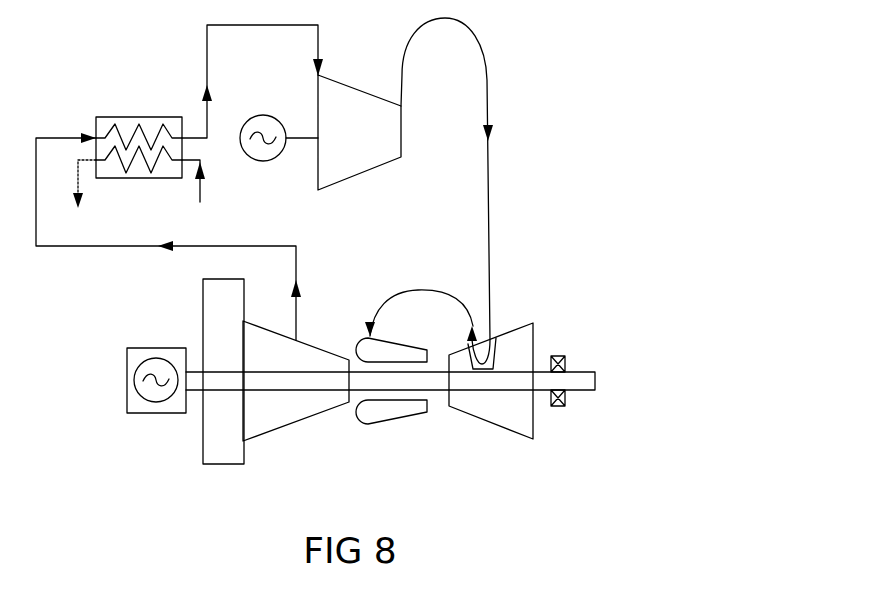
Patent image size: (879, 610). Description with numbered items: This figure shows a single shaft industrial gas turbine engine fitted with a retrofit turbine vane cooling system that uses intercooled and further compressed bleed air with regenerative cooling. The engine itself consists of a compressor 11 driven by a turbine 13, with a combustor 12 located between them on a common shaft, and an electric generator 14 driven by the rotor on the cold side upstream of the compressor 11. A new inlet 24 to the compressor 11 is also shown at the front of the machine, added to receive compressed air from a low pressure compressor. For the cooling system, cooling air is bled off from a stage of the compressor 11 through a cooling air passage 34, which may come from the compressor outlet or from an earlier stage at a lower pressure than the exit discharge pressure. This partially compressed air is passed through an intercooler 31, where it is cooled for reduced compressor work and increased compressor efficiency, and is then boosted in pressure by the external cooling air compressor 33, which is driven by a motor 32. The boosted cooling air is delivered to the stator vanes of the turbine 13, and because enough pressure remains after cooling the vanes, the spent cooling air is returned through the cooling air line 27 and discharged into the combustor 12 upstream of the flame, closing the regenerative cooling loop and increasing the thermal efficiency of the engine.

The compressor 11 is at (273, 408).
The combustor 12 is at (373, 413).
The turbine 13 is at (498, 412).
The electric generator 14 is at (153, 395).
The inlet 24 is at (225, 445).
The cooling air line 27 is at (413, 290).
The intercooler 31 is at (128, 123).
The motor 32 is at (263, 130).
The external cooling air compressor 33 is at (355, 112).
The cooling air passage 34 is at (107, 247).